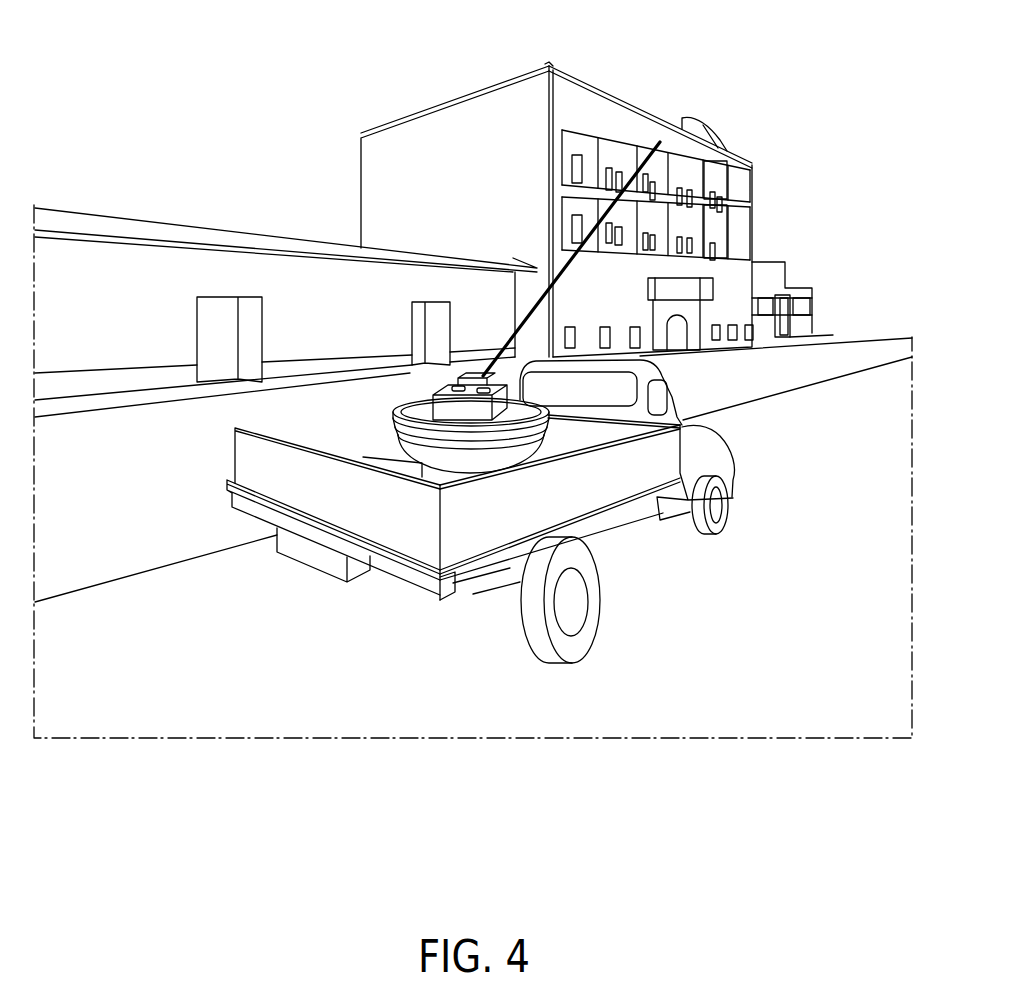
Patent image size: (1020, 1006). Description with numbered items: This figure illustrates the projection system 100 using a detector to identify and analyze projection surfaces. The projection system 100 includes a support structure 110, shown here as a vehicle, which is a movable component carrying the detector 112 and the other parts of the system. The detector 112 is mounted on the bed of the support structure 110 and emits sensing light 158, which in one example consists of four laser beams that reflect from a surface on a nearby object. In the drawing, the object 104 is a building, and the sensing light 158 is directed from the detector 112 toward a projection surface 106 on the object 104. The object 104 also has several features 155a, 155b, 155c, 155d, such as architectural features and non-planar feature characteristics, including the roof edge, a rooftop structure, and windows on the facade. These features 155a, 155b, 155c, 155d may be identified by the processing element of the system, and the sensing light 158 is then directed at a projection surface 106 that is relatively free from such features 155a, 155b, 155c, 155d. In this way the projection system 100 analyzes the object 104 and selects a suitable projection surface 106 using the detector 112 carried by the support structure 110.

The projection system 100 is at (480, 402).
The object 104 is at (456, 140).
The projection surface 106 is at (620, 128).
The support structure 110 is at (606, 476).
The detector 112 is at (476, 350).
The sensing light 158 is at (523, 308).
The feature 155a is at (545, 68).
The feature 155b is at (690, 104).
The feature 155c is at (712, 176).
The feature 155d is at (712, 233).